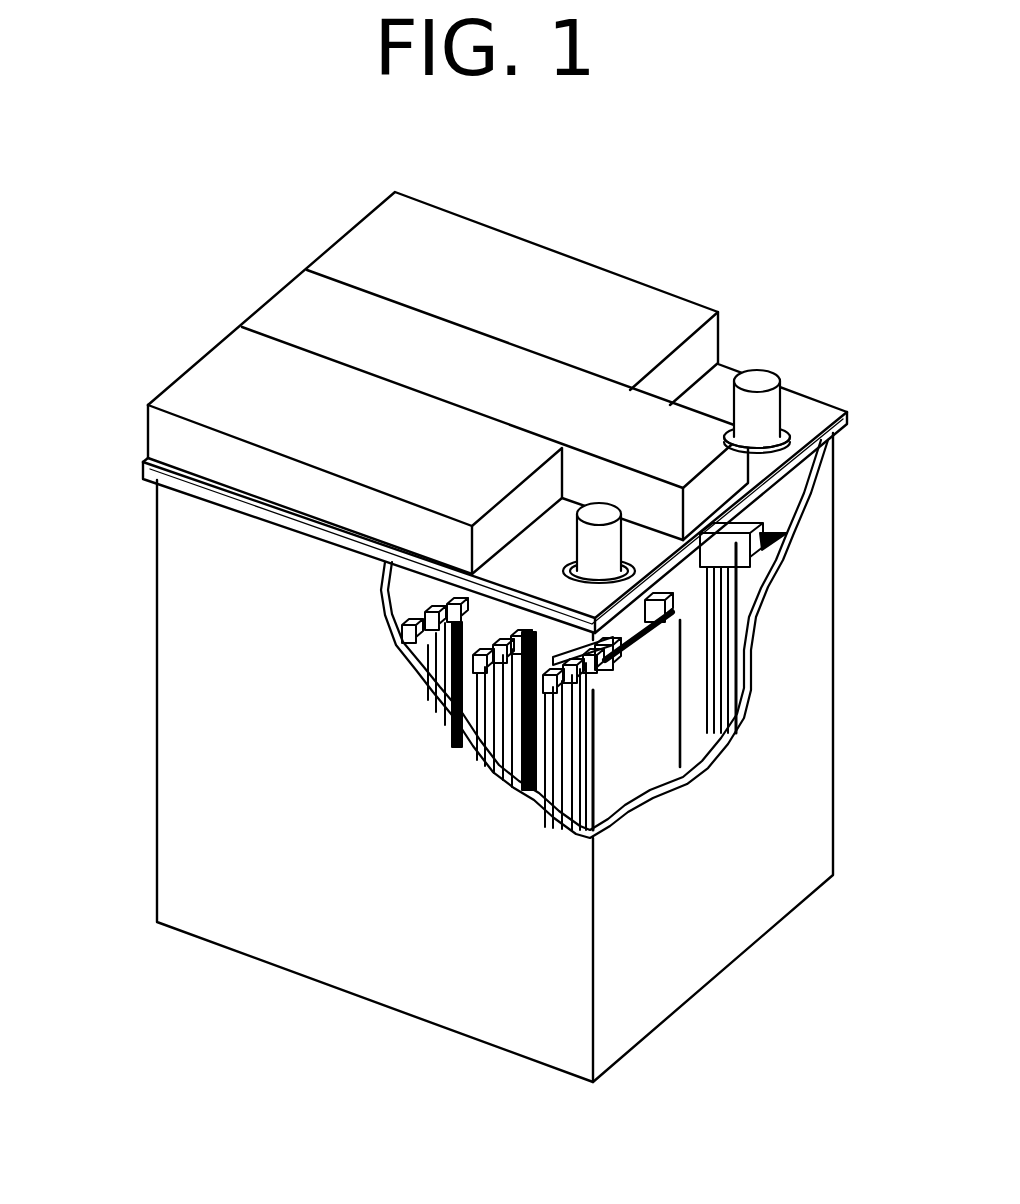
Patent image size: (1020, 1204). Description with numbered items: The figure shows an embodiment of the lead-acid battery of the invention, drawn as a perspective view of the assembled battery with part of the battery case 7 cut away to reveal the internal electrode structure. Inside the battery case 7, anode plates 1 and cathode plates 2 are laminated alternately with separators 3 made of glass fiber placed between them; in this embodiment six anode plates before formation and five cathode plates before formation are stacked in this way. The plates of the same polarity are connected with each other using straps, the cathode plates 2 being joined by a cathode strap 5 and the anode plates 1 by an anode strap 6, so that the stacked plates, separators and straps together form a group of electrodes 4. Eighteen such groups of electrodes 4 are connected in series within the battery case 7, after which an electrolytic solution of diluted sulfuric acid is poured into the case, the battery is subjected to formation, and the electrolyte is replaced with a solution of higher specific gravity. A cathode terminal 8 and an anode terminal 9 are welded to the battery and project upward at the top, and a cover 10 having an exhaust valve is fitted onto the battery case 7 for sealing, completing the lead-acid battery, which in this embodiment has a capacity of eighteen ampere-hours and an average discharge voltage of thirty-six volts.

The anode plate 1 is at (673, 743).
The cathode plate 2 is at (677, 660).
The separator 3 is at (567, 840).
The group of electrodes 4 is at (632, 785).
The cathode strap 5 is at (683, 600).
The anode strap 6 is at (527, 787).
The battery case 7 is at (173, 629).
The cathode terminal 8 is at (600, 516).
The anode terminal 9 is at (767, 407).
The cover 10 is at (473, 238).